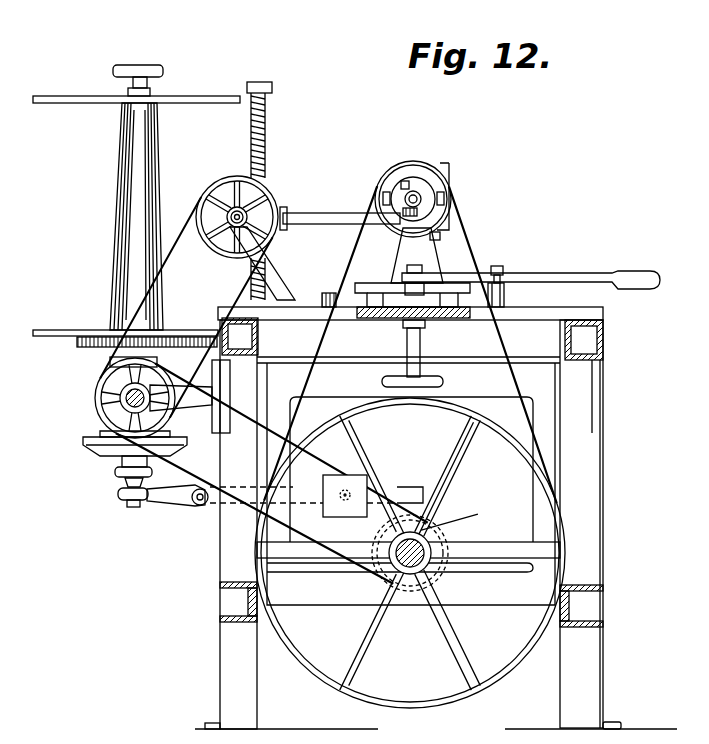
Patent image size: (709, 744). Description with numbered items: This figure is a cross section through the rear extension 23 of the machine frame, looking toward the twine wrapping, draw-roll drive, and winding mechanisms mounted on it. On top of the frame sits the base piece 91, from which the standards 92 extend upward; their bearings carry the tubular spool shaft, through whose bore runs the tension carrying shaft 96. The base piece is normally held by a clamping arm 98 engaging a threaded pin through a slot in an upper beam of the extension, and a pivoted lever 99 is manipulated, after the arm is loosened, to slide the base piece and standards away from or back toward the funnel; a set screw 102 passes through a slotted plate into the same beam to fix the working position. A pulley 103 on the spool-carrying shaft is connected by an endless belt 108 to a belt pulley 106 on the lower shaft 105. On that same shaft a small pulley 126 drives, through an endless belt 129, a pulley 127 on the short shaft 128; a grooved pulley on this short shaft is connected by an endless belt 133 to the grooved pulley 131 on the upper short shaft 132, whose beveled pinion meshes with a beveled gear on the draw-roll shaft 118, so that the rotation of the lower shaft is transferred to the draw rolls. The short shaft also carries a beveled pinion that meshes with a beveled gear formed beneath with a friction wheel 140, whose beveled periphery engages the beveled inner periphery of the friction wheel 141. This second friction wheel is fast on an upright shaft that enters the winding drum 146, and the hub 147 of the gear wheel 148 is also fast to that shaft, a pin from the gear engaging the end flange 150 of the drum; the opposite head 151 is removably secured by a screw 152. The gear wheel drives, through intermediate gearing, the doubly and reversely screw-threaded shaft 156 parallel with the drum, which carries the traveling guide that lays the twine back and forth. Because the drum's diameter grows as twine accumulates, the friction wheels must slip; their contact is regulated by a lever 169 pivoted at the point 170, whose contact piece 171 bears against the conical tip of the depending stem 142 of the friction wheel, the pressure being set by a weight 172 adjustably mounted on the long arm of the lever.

The rear extension 23 is at (598, 523).
The base piece 91 is at (368, 283).
The standards 92 is at (430, 258).
The tension carrying shaft 96 is at (425, 207).
The clamping arm 98 is at (421, 345).
The pivoted lever 99 is at (567, 275).
The set screw 102 is at (411, 297).
The pulley 103 is at (452, 185).
The shaft 105 is at (415, 575).
The belt pulley 106 is at (530, 652).
The endless belt 108 is at (520, 378).
The shaft 118 is at (322, 214).
The small pulley 126 is at (380, 572).
The pulley 127 is at (162, 407).
The short shaft 128 is at (128, 397).
The endless belt 129 is at (295, 559).
The grooved pulley 131 is at (219, 179).
The upper short shaft 132 is at (246, 258).
The endless belt 133 is at (169, 262).
The friction wheel 140 is at (97, 432).
The friction wheel 141 is at (92, 448).
The depending stem 142 is at (119, 468).
The winding drum 146 is at (118, 212).
The hub 147 is at (110, 353).
The gear wheel 148 is at (76, 341).
The end flange 150 is at (48, 328).
The head 151 is at (41, 95).
The screw 152 is at (155, 84).
The doubly and reversely screw-threaded shaft 156 is at (267, 141).
The lever 169 is at (175, 503).
The pivot point 170 is at (197, 506).
The contact piece 171 is at (122, 491).
The weight 172 is at (330, 481).